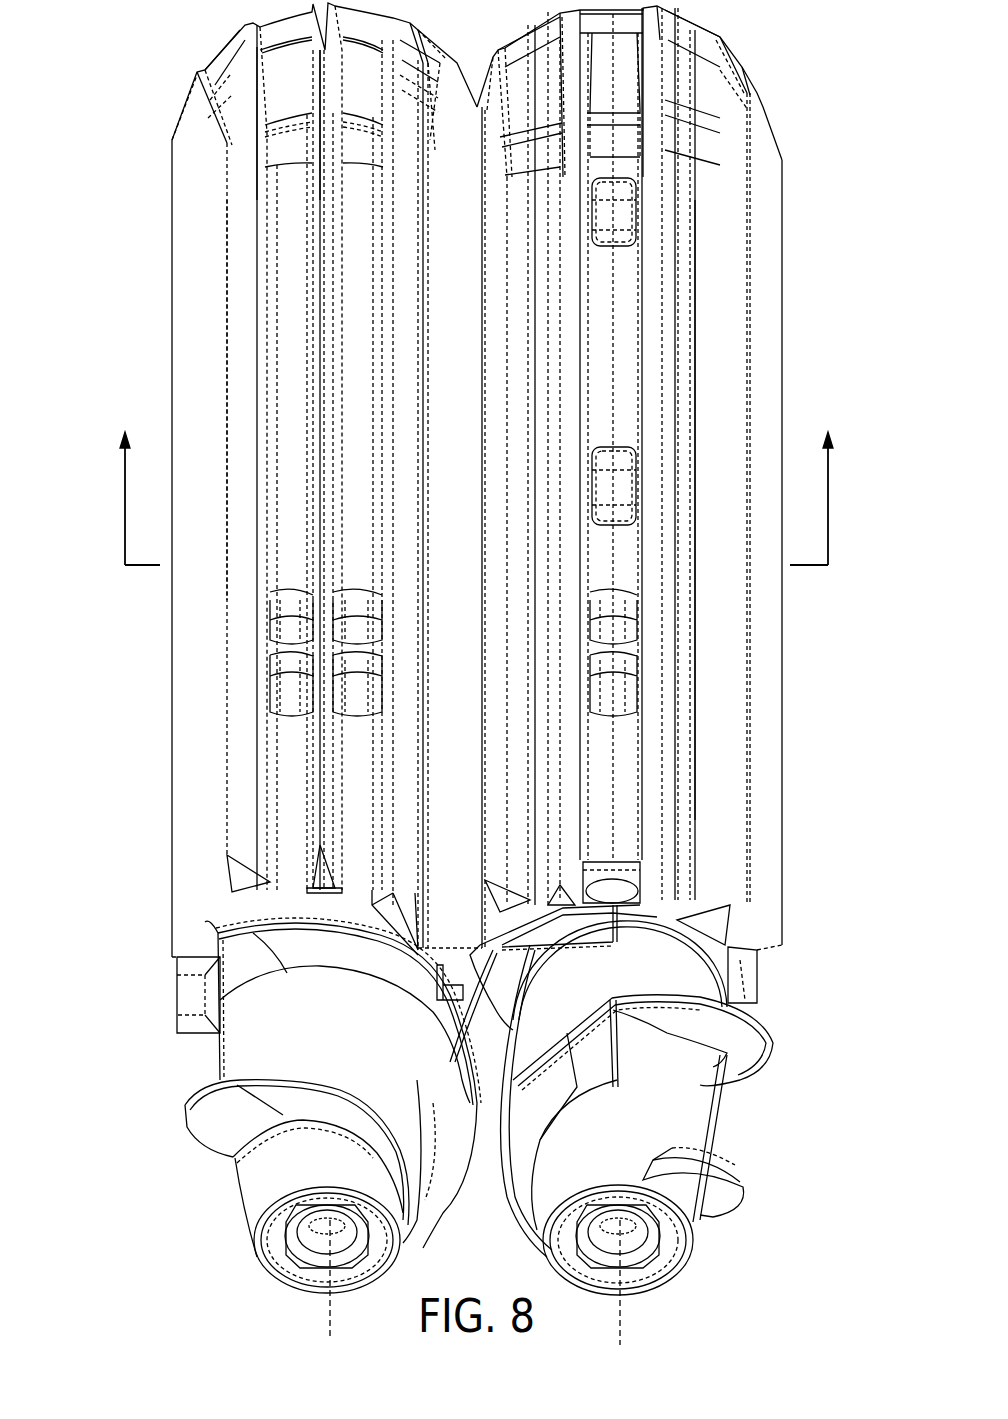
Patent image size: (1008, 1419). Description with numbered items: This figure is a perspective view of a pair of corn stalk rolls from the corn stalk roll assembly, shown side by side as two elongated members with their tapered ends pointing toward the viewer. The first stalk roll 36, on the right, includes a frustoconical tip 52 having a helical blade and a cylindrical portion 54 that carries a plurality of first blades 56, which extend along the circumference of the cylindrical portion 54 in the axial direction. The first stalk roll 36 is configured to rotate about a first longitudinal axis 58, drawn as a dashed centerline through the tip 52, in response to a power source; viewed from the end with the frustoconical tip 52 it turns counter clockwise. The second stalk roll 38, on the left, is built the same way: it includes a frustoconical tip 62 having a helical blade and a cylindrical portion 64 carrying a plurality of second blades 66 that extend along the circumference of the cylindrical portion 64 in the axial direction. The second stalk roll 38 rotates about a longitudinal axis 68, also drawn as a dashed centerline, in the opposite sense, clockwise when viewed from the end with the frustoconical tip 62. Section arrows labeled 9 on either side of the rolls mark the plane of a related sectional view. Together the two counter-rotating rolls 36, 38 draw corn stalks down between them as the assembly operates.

The first stalk roll 36 is at (805, 182).
The second stalk roll 38 is at (135, 338).
The frustoconical tip 52 is at (700, 1112).
The cylindrical portion 54 is at (683, 823).
The first blades 56 is at (650, 237).
The first longitudinal axis 58 is at (618, 1315).
The frustoconical tip 62 is at (265, 1188).
The cylindrical portion 64 is at (290, 430).
The second blades 66 is at (323, 152).
The longitudinal axis 68 is at (330, 1312).
The section line 9 is at (476, 484).